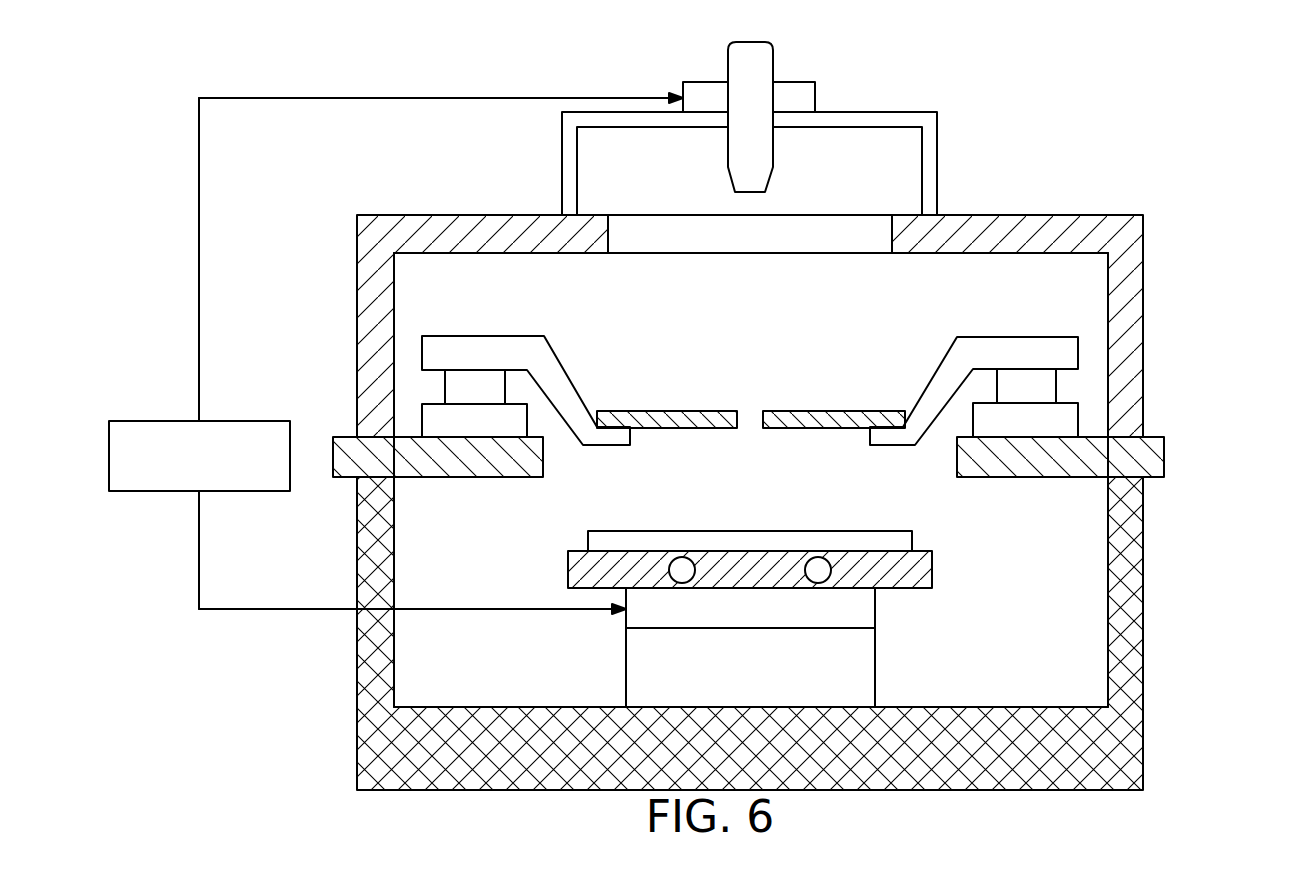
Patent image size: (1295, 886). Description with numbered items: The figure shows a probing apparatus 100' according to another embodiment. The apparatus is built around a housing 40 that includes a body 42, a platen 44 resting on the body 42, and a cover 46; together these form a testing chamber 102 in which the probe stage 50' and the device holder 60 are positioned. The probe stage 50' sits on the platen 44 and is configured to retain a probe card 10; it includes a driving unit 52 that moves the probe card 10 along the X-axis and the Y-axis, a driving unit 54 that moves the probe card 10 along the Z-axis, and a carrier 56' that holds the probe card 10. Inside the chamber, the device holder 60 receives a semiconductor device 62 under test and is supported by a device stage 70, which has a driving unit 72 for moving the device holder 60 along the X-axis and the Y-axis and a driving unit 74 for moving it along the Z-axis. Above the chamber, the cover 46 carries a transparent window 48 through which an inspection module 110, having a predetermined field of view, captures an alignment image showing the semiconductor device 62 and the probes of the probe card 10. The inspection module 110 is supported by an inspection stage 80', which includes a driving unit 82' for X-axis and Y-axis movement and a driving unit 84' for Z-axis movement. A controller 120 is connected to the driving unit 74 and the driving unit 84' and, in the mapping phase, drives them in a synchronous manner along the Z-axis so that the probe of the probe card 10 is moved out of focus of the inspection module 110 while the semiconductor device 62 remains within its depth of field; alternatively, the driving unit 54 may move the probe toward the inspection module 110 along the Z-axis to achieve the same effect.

The probing apparatus 100' is at (810, 411).
The testing chamber 102 is at (1085, 268).
The housing 40 is at (808, 502).
The body 42 is at (1135, 515).
The platen 44 is at (780, 457).
The cover 46 is at (1135, 420).
The transparent window 48 is at (875, 240).
The probe stage 50' is at (854, 371).
The driving unit 52 is at (1065, 420).
The driving unit 54 is at (1033, 388).
The carrier 56' is at (827, 372).
The probe card 10 is at (835, 412).
The device holder 60 is at (935, 570).
The semiconductor device 62 is at (590, 540).
The device stage 70 is at (810, 647).
The driving unit 72 is at (784, 667).
The driving unit 74 is at (865, 608).
The inspection stage 80' is at (817, 148).
The driving unit 82' is at (787, 163).
The driving unit 84' is at (847, 97).
The inspection module 110 is at (745, 62).
The controller 120 is at (155, 420).